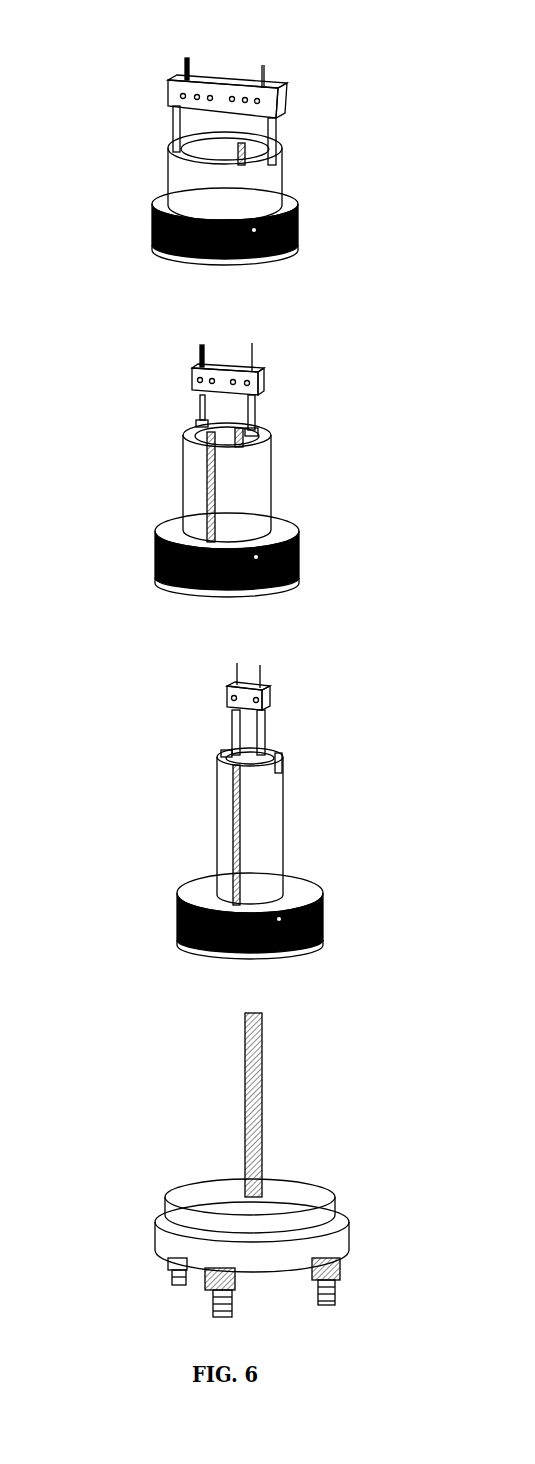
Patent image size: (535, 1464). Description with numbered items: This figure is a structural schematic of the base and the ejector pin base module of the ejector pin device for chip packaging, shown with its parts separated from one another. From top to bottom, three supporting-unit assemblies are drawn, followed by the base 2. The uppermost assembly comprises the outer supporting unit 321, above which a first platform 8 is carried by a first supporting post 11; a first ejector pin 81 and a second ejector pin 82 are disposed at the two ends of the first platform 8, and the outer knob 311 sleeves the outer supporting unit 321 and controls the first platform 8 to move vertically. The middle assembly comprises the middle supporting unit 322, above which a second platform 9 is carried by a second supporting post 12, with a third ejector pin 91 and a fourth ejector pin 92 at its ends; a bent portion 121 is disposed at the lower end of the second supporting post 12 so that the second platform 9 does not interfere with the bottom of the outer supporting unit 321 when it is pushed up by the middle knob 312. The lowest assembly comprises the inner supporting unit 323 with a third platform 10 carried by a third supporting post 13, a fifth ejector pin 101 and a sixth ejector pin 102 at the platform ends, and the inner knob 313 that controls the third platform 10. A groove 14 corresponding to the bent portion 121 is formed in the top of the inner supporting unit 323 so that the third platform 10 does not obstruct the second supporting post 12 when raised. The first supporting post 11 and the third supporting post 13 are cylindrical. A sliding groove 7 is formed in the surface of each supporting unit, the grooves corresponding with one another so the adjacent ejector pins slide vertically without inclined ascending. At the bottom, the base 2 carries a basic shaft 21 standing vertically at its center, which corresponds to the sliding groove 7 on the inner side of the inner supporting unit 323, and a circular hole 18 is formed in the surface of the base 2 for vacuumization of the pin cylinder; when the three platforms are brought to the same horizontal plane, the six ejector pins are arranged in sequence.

The base 2 is at (330, 1240).
The sliding groove 7 is at (250, 163).
The first platform 8 is at (170, 95).
The second platform 9 is at (196, 380).
The third platform 10 is at (228, 698).
The first supporting post 11 is at (172, 125).
The second supporting post 12 is at (198, 400).
The third supporting post 13 is at (233, 735).
The groove 14 is at (222, 753).
The circular hole 18 is at (283, 1173).
The basic shaft 21 is at (263, 1093).
The first ejector pin 81 is at (186, 60).
The second ejector pin 82 is at (264, 68).
The third ejector pin 91 is at (201, 347).
The fourth ejector pin 92 is at (253, 350).
The fifth ejector pin 101 is at (237, 665).
The sixth ejector pin 102 is at (261, 668).
The bent portion 121 is at (196, 423).
The outer knob 311 is at (152, 232).
The middle knob 312 is at (300, 557).
The inner knob 313 is at (178, 915).
The outer supporting unit 321 is at (176, 178).
The middle supporting unit 322 is at (257, 482).
The inner supporting unit 323 is at (265, 838).